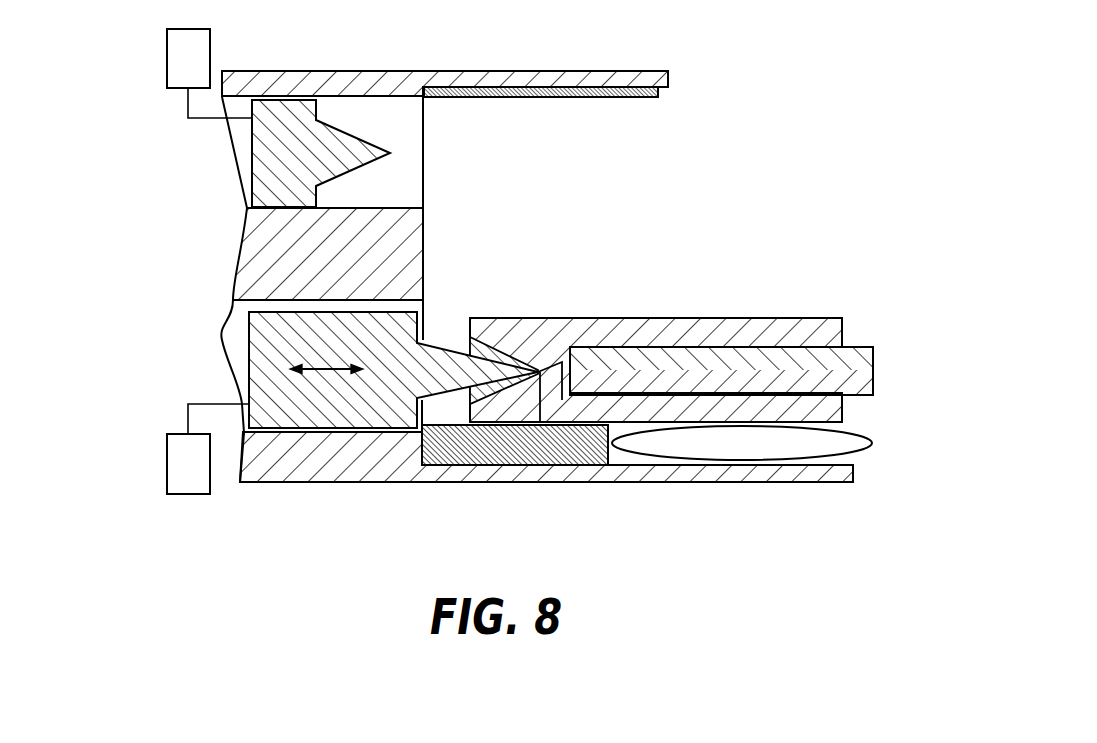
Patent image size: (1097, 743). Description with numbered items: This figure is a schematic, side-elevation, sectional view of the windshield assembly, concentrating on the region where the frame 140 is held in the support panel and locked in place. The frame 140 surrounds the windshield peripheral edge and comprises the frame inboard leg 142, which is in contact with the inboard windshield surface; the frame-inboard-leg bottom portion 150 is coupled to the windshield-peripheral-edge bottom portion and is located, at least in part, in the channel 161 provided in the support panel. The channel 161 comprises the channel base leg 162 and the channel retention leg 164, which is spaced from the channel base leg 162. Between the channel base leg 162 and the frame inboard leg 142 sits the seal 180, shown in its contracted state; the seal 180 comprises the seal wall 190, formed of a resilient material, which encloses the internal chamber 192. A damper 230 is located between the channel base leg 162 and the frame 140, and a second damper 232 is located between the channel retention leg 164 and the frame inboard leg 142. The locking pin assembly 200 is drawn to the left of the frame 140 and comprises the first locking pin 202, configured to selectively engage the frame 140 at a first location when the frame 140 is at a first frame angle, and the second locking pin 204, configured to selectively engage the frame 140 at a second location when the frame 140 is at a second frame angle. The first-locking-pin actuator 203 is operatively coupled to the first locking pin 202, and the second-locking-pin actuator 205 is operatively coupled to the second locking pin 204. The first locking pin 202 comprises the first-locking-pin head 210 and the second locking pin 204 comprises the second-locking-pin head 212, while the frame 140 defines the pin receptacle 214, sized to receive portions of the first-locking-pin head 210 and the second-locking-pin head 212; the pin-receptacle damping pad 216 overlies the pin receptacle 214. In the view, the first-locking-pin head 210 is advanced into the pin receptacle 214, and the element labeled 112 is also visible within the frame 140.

The locking pin assembly 200 is at (230, 496).
The second damper 232 is at (502, 87).
The channel retention leg 164 is at (605, 72).
The second-locking-pin actuator 205 is at (170, 64).
The second locking pin 204 is at (286, 153).
The second-locking-pin head 212 is at (352, 138).
The channel 161 is at (425, 253).
The frame 140 is at (815, 316).
The frame inboard leg 142 is at (843, 408).
The pin-receptacle damping pad 216 is at (502, 350).
The first locking pin 202 is at (358, 358).
The first-locking-pin head 210 is at (432, 355).
The pin receptacle 214 is at (562, 345).
The clamped member 112 is at (875, 368).
The channel base leg 162 is at (628, 483).
The damper 230 is at (505, 467).
The seal wall 190 is at (848, 460).
The internal chamber 192 is at (742, 443).
The seal 180 is at (878, 437).
The frame-inboard-leg bottom portion 150 is at (540, 422).
The first-locking-pin actuator 203 is at (188, 496).